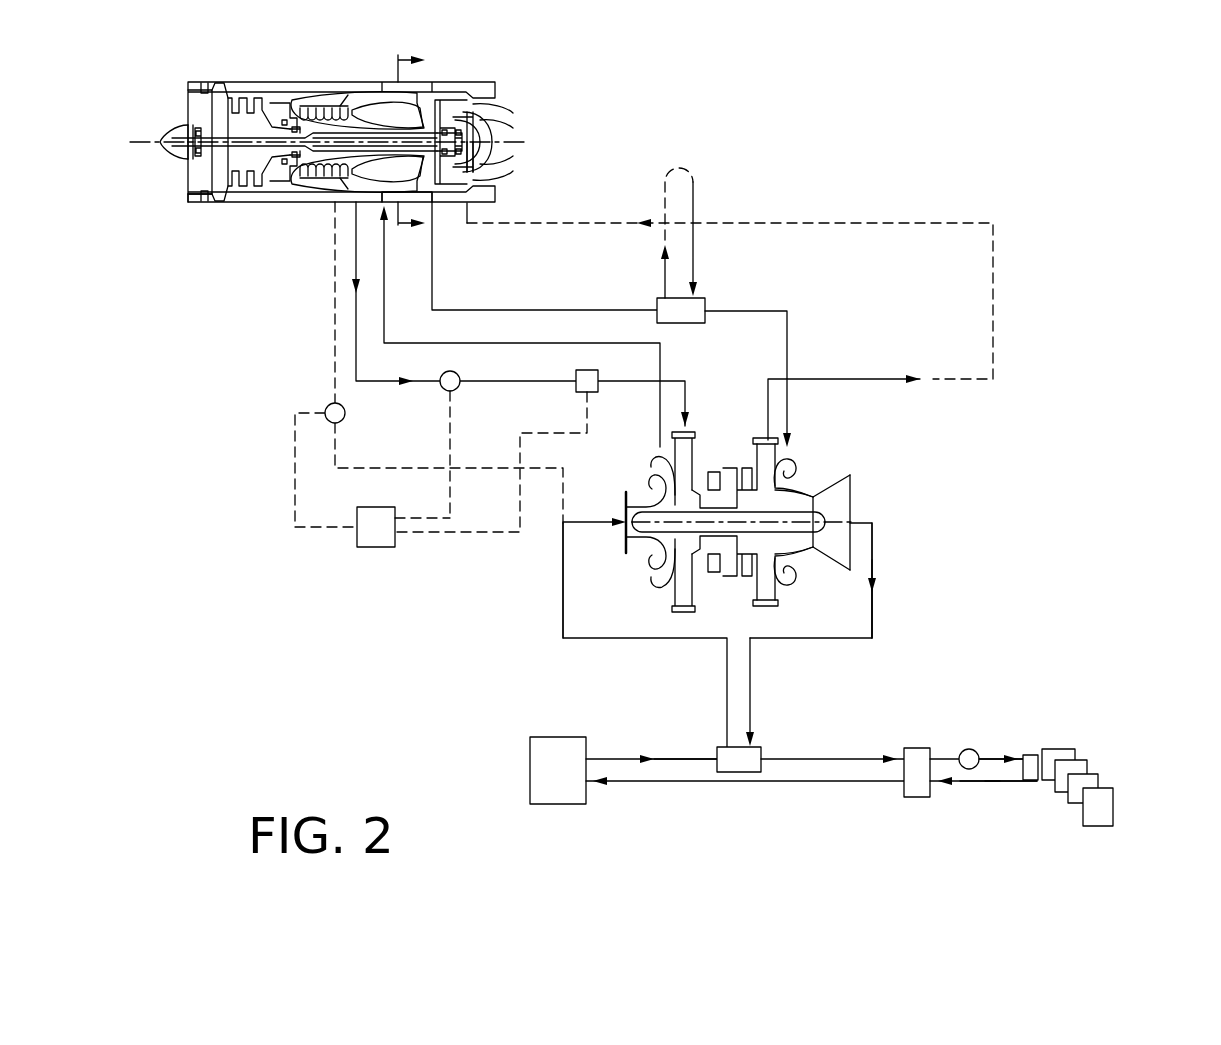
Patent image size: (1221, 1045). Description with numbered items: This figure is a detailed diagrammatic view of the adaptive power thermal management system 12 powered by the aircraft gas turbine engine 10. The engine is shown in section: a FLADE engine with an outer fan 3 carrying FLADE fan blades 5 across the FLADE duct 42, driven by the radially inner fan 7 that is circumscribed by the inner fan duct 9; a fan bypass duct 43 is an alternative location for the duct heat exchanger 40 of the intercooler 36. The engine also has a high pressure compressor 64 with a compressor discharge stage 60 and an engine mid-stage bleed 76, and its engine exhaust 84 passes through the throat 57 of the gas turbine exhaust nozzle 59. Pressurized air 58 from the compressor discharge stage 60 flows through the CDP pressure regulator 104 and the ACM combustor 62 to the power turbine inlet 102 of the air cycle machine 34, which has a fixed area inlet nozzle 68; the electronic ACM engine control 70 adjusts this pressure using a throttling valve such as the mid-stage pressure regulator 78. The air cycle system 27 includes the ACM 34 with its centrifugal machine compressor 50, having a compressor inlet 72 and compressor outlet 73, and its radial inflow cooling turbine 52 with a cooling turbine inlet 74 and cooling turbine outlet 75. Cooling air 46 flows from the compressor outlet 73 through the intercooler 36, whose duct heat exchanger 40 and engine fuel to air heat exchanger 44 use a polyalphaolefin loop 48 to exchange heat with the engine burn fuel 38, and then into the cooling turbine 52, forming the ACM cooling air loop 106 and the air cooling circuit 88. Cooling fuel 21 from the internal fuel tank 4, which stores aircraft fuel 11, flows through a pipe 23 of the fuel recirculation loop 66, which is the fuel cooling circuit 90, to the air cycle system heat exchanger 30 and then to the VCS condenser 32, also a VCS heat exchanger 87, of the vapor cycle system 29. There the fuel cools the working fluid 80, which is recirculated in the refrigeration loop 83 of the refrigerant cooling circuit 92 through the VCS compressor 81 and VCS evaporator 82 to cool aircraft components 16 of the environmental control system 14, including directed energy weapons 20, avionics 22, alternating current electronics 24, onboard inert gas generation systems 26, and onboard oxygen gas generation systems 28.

The outer fan 3 is at (204, 83).
The FLADE fan blades 5 is at (213, 98).
The inner fan 7 is at (226, 105).
The inner fan duct 9 is at (227, 192).
The gas turbine engine 10 is at (270, 82).
The FLADE duct 42 is at (290, 186).
The fan bypass duct 43 is at (328, 98).
The high pressure compressor 64 is at (320, 182).
The engine mid-stage bleed 76 is at (340, 180).
The gas turbine exhaust nozzle 59 is at (513, 113).
The throat 57 is at (513, 128).
The engine exhaust 84 is at (493, 163).
The compressor discharge stage 60 is at (463, 187).
The duct heat exchanger 40 is at (417, 204).
The pressurized air 58 is at (380, 383).
The CDP pressure regulator 104 is at (458, 390).
The ACM combustor 62 is at (592, 370).
The mid-stage pressure regulator 78 is at (330, 405).
The electronic ACM engine control 70 is at (393, 541).
The engine fuel to air heat exchanger 44 is at (683, 323).
The polyalphaolefin loop 48 is at (700, 178).
The engine burn fuel 38 is at (697, 262).
The intercooler 36 is at (773, 305).
The air cooling circuit 88 is at (787, 340).
The cooling air 46 is at (540, 343).
The adaptive power thermal management system 12 is at (497, 586).
The ACM cooling air loop 106 is at (563, 620).
The air cycle system 27 is at (893, 598).
The compressor inlet 72 is at (626, 505).
The compressor outlet 73 is at (660, 458).
The machine compressor 50 is at (646, 570).
The power turbine inlet 102 is at (686, 432).
The fixed area inlet nozzle 68 is at (690, 480).
The cooling turbine inlet 74 is at (795, 460).
The air cycle machine 34 is at (815, 495).
The cooling turbine 52 is at (830, 490).
The cooling turbine outlet 75 is at (850, 515).
The aircraft fuel 11 is at (556, 769).
The internal fuel tank 4 is at (557, 737).
The cooling fuel 21 is at (644, 757).
The pipe 23 is at (690, 757).
The fuel recirculation loop 66 is at (775, 742).
The air cycle system heat exchanger 30 is at (740, 772).
The fuel cooling circuit 90 is at (790, 781).
The VCS condenser 32 is at (905, 748).
The VCS heat exchanger 87 is at (905, 797).
The VCS compressor 81 is at (966, 748).
The working fluid 80 is at (957, 781).
The refrigerant cooling circuit 92 is at (972, 781).
The refrigeration loop 83 is at (997, 781).
The vapor cycle system 29 is at (990, 742).
The VCS evaporator 82 is at (1035, 755).
The aircraft components 16 is at (1127, 815).
The environmental control system 14 is at (1078, 743).
The directed energy weapons 20 is at (1076, 758).
The alternating current electronics 24 is at (1085, 770).
The onboard inert gas generation systems 26 is at (1100, 783).
The onboard oxygen gas generation systems 28 is at (1115, 790).
The avionics 22 is at (1095, 826).